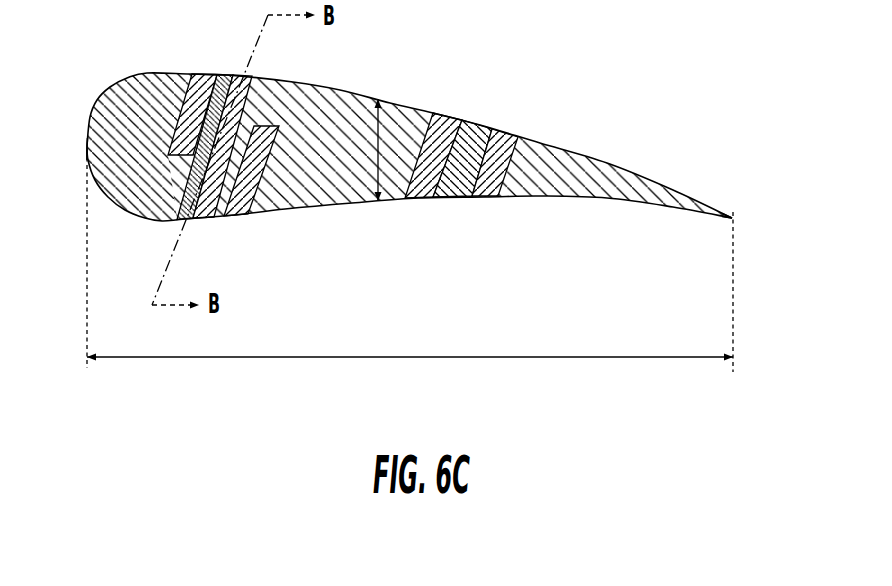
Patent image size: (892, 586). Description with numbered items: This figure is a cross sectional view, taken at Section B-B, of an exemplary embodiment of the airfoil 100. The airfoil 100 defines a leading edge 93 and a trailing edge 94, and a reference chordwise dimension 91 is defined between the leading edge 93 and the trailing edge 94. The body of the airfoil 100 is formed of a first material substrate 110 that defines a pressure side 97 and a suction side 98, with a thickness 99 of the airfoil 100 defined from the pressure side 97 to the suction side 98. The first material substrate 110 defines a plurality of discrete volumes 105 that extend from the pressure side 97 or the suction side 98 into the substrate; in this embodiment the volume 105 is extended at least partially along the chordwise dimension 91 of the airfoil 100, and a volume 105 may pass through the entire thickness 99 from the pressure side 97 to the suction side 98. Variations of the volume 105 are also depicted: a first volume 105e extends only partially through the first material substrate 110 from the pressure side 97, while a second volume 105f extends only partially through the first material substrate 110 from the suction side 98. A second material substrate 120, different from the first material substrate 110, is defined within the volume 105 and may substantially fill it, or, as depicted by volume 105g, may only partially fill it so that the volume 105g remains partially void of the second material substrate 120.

The airfoil 100 is at (634, 129).
The first material substrate 110 is at (143, 97).
The leading edge 93 is at (83, 150).
The trailing edge 94 is at (736, 212).
The reference chordwise dimension 91 is at (568, 357).
The pressure side 97 is at (452, 203).
The suction side 98 is at (480, 117).
The thickness 99 is at (378, 150).
The volume 105 is at (214, 150).
The first volume 105e is at (234, 217).
The second volume 105f is at (207, 79).
The volume 105g is at (447, 113).
The second material substrate 120 is at (247, 78).